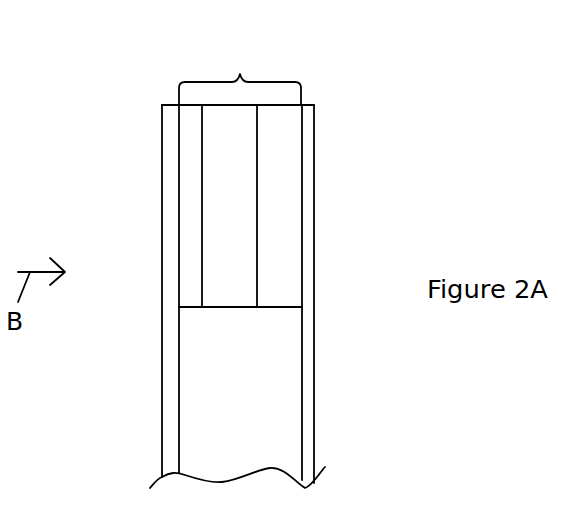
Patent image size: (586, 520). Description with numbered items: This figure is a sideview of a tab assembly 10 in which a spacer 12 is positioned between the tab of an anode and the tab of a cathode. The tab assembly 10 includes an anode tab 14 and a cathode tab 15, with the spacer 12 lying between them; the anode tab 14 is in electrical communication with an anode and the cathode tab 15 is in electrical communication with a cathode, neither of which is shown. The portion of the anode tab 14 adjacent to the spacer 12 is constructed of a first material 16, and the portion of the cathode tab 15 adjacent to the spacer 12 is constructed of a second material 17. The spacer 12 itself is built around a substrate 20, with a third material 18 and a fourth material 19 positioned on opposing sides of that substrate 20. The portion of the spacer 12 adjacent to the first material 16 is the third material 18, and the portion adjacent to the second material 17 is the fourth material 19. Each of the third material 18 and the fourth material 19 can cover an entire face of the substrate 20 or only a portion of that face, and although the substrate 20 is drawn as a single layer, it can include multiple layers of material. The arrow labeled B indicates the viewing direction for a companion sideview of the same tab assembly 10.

The tab assembly 10 is at (141, 54).
The spacer 12 is at (240, 71).
The anode tab 14 is at (161, 170).
The cathode tab 15 is at (316, 230).
The first material 16 is at (172, 230).
The second material 17 is at (307, 172).
The third material 18 is at (192, 297).
The fourth material 19 is at (278, 297).
The substrate 20 is at (231, 297).